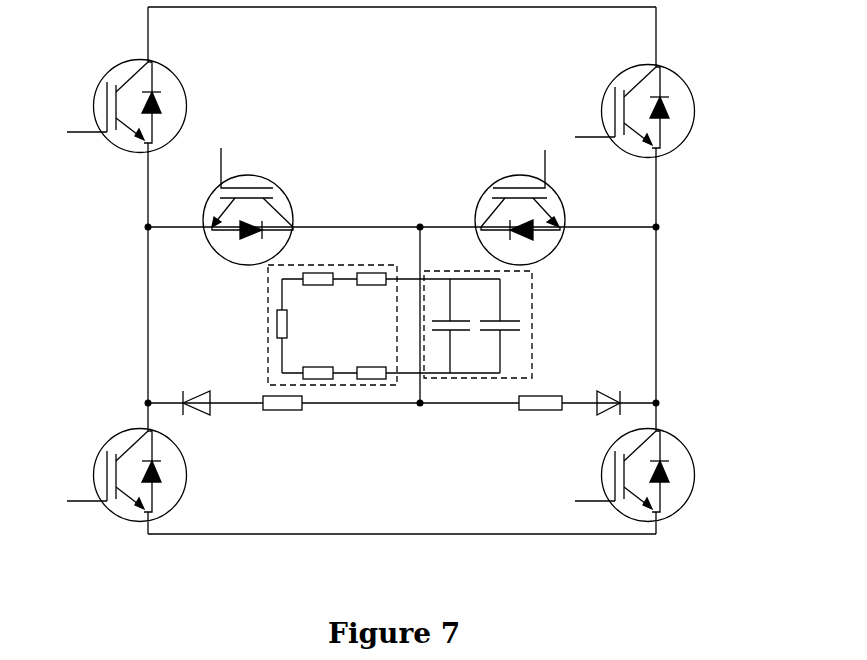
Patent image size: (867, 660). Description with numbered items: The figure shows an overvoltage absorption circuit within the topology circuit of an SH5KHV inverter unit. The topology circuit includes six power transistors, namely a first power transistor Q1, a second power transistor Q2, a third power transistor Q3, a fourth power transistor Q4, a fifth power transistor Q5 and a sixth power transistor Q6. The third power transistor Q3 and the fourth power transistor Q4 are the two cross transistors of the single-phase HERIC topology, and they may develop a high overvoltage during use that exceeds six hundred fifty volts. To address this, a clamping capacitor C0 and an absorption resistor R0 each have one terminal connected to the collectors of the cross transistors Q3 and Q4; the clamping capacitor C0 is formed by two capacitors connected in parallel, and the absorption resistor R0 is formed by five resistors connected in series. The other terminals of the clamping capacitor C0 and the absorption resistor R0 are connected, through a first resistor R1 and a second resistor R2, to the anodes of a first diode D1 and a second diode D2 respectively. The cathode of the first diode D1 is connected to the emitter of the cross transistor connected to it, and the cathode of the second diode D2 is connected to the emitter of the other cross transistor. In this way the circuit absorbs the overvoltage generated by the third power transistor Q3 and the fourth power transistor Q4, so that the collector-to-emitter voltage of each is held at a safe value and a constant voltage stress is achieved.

The first power transistor Q1 is at (109, 109).
The second power transistor Q2 is at (655, 113).
The third power transistor Q3 is at (268, 195).
The fourth power transistor Q4 is at (508, 196).
The fifth power transistor Q5 is at (113, 491).
The sixth power transistor Q6 is at (623, 489).
The first diode D1 is at (197, 384).
The second diode D2 is at (605, 387).
The absorption resistor R0 is at (344, 325).
The first resistor R1 is at (282, 417).
The second resistor R2 is at (540, 418).
The clamping capacitor C0 is at (476, 324).